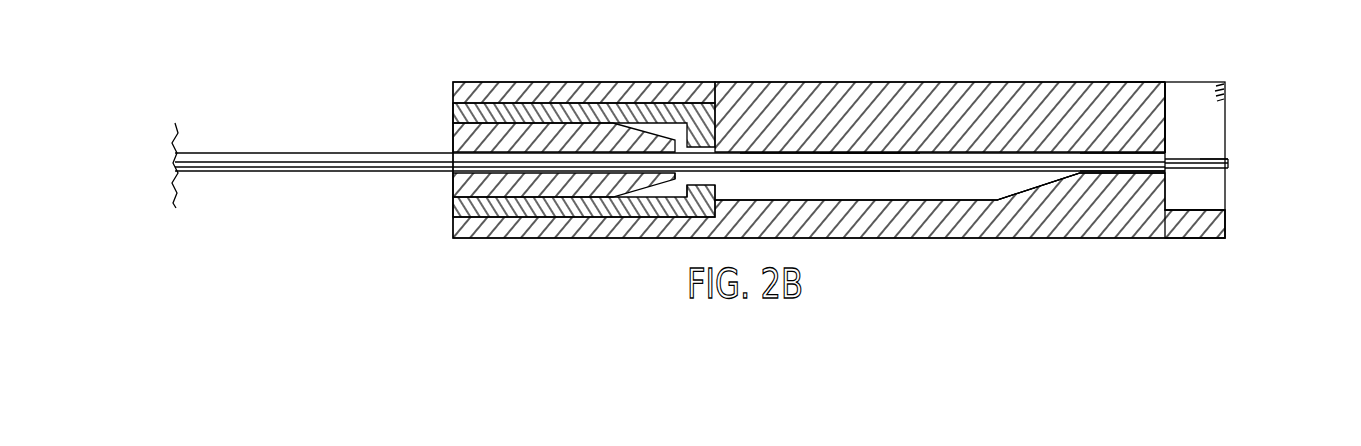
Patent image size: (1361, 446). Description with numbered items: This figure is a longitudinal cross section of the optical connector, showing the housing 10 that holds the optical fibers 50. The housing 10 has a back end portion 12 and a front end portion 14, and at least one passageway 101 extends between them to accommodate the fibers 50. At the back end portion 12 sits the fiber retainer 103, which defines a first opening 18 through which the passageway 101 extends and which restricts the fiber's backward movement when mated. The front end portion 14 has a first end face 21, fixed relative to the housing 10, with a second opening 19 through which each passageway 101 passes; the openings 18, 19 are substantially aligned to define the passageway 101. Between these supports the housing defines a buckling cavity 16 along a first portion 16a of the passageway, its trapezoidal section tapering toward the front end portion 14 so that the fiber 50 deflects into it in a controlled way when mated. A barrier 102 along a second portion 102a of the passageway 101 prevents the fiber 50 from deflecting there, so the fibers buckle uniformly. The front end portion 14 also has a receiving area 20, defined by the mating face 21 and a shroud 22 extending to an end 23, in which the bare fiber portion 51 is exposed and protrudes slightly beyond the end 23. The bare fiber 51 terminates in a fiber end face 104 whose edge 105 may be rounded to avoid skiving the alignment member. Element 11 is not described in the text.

The housing 10 is at (1040, 82).
The optical fiber 11 is at (995, 152).
The back end portion 12 is at (558, 92).
The front end portion 14 is at (1138, 95).
The buckling cavity 16 is at (852, 203).
The first portion of the passageway 16a is at (930, 176).
The first opening 18 is at (447, 142).
The second opening 19 is at (1130, 158).
The receiving area 20 is at (1208, 124).
The first end face 21 is at (1166, 100).
The shroud 22 is at (1197, 228).
The end of the shroud 23 is at (1226, 218).
The optical fiber 50 is at (240, 152).
The bare fiber portion 51 is at (1212, 150).
The passageway 101 is at (815, 160).
The barrier 102 is at (865, 150).
The second portion of the passageway 102a is at (922, 105).
The fiber retainer 103 is at (437, 122).
The fiber end face 104 is at (1236, 158).
The edge of the fiber end face 105 is at (1212, 172).